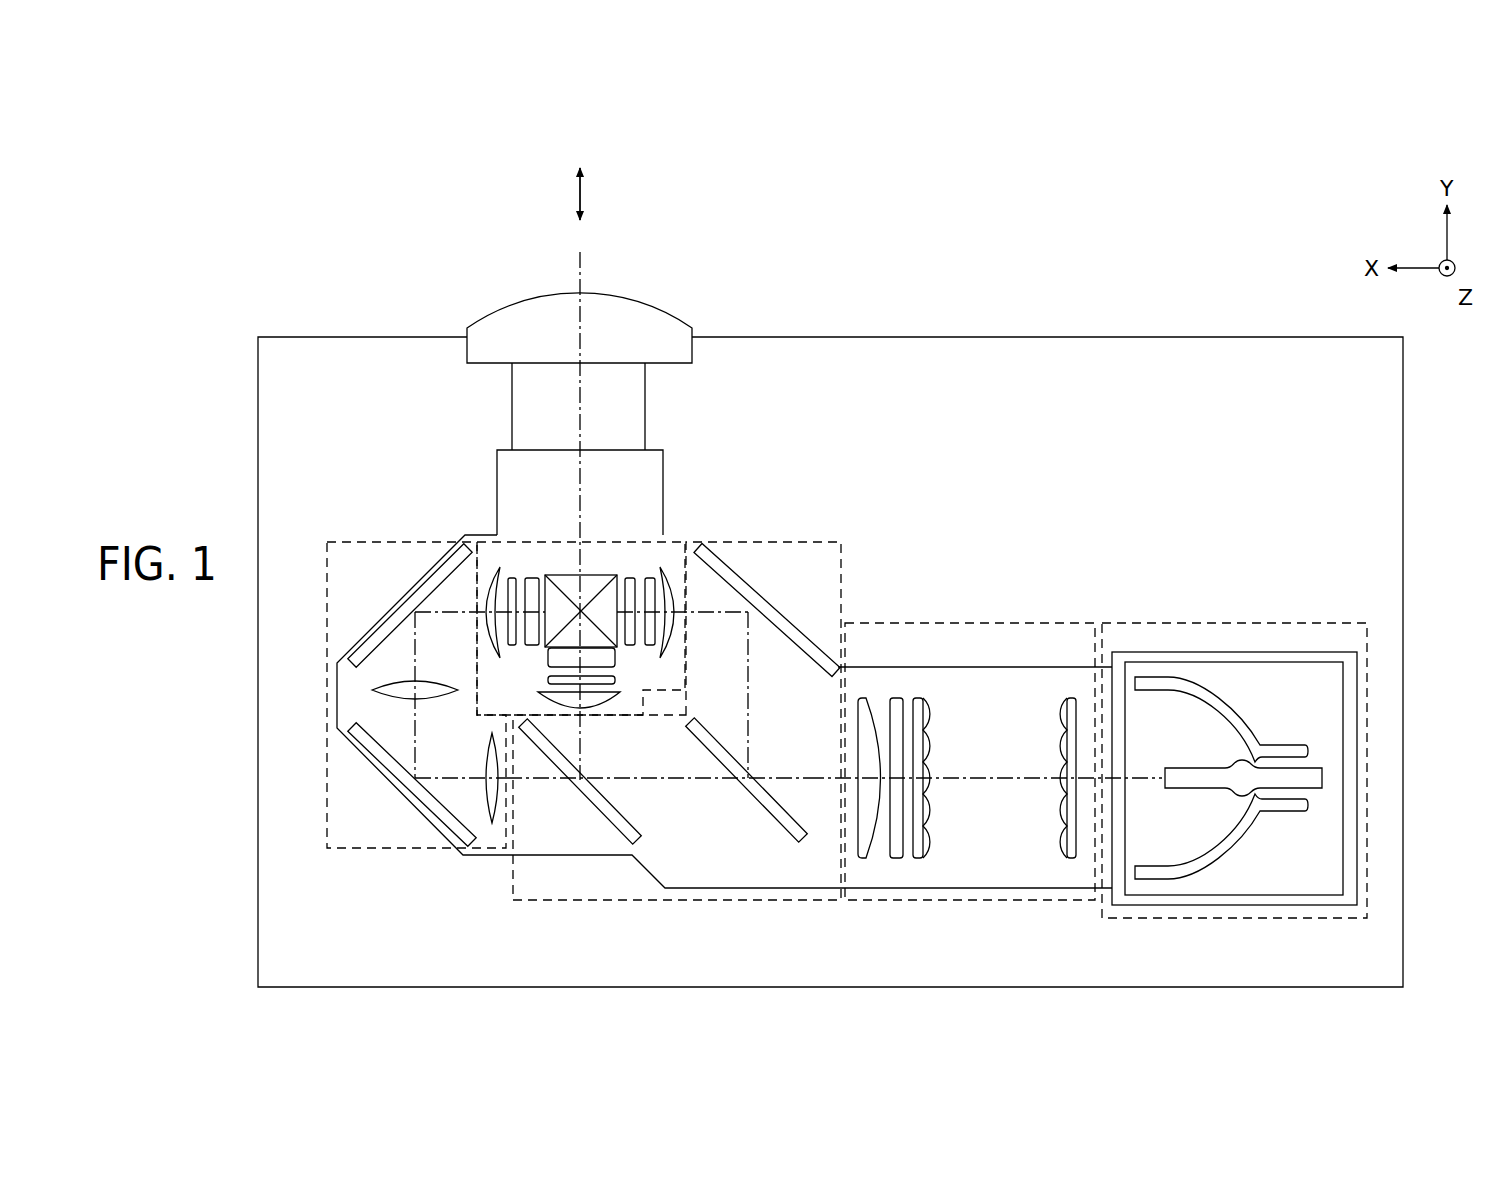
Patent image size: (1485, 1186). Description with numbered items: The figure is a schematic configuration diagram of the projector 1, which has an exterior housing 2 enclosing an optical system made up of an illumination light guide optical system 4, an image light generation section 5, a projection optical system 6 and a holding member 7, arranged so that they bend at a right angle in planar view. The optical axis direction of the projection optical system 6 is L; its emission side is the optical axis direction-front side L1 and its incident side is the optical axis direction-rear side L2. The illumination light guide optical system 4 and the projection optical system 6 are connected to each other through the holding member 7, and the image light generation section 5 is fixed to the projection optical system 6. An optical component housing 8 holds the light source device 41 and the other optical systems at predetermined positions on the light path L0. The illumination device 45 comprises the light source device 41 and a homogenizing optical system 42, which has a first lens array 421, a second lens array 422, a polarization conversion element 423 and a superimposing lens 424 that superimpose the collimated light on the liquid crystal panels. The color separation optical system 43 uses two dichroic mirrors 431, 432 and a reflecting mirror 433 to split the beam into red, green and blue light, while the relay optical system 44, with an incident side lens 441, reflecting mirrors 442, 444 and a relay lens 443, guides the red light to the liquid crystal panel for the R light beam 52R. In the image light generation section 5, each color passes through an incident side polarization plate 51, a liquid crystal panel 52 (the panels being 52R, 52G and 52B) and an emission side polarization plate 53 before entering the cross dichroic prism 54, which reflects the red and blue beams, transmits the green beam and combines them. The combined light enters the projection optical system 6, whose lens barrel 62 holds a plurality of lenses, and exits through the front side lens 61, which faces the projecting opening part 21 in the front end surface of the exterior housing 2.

The projector 1 is at (1289, 300).
The exterior housing 2 is at (1078, 337).
The projecting opening part 21 is at (583, 360).
The illumination light guide optical system 4 is at (1003, 592).
The light source device 41 is at (1234, 789).
The homogenizing optical system 42 is at (985, 750).
The first lens array 421 is at (1070, 700).
The second lens array 422 is at (920, 700).
The polarization conversion element 423 is at (898, 700).
The superimposing lens 424 is at (868, 700).
The color separation optical system 43 is at (673, 753).
The dichroic mirror 431 is at (778, 820).
The dichroic mirror 432 is at (612, 820).
The reflecting mirror 433 is at (770, 612).
The relay optical system 44 is at (385, 730).
The incident side lens 441 is at (490, 812).
The reflecting mirror 442 is at (378, 752).
The relay lens 443 is at (428, 690).
The reflecting mirror 444 is at (405, 618).
The illumination device 45 is at (1087, 770).
The image light generation section 5 is at (581, 602).
The incident side polarization plate 51 is at (531, 577).
The liquid crystal panel 52 is at (581, 615).
The liquid crystal panel for the R light beam 52R is at (511, 577).
The liquid crystal panel for the G light beam 52G is at (606, 703).
The liquid crystal panel for the B light beam 52B is at (630, 577).
The emission side polarization plate 53 is at (503, 566).
The cross dichroic prism 54 is at (577, 573).
The projection optical system 6 is at (596, 371).
The front side lens 61 is at (688, 352).
The lens barrel 62 is at (643, 398).
The holding member 7 is at (665, 456).
The optical component housing 8 is at (590, 857).
The optical axis direction L is at (587, 275).
The light path L0 is at (978, 782).
The optical axis direction-front side L1 is at (578, 180).
The optical axis direction-rear side L2 is at (578, 209).